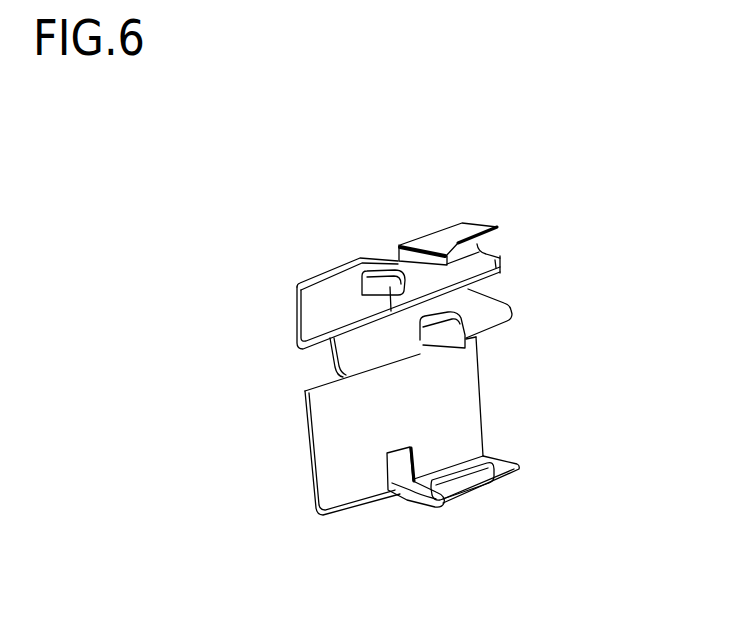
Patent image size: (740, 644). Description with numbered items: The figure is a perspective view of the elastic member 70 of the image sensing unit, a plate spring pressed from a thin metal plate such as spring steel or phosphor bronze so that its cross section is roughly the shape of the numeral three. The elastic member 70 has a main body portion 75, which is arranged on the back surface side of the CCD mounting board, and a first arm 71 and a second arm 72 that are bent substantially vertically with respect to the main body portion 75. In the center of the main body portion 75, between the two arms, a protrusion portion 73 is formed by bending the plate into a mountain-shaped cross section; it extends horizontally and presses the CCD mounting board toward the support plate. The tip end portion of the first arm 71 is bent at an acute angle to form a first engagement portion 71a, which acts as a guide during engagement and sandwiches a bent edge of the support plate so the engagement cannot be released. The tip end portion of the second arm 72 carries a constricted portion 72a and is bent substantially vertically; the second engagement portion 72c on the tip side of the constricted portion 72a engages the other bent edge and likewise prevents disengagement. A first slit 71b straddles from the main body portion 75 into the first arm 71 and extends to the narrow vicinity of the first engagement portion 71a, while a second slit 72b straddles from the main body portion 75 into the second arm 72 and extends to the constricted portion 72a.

The elastic member 70 is at (238, 206).
The first arm 71 is at (497, 463).
The first engagement portion 71a is at (463, 480).
The first slit 71b is at (396, 470).
The second arm 72 is at (467, 231).
The constricted portion 72a is at (490, 244).
The second slit 72b is at (388, 256).
The second engagement portion 72c is at (503, 264).
The protrusion portion 73 is at (476, 303).
The main body portion 75 is at (463, 398).